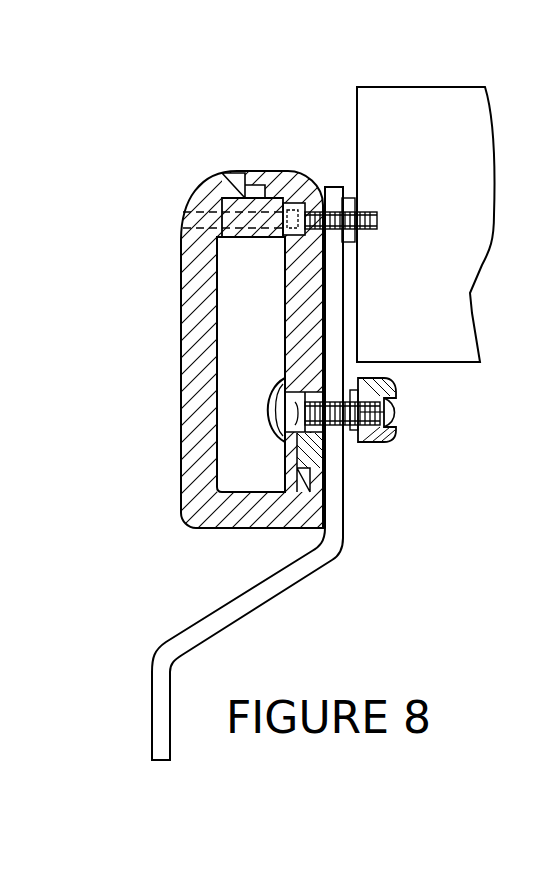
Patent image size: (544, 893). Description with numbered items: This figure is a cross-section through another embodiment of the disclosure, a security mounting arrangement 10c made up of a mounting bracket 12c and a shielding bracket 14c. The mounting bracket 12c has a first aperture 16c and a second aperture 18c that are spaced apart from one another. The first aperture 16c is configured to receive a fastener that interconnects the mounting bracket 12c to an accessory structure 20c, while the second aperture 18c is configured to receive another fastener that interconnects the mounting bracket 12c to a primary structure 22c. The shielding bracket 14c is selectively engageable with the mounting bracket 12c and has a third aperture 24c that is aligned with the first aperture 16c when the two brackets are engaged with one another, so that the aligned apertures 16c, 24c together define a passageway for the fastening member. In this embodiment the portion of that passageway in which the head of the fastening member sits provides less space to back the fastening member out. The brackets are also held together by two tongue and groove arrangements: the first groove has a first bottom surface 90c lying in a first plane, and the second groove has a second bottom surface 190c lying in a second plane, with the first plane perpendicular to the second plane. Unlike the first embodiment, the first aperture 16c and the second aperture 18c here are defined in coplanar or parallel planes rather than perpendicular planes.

The security mounting arrangement 10c is at (158, 128).
The mounting bracket 12c is at (285, 298).
The shielding bracket 14c is at (181, 445).
The first aperture 16c is at (325, 225).
The second aperture 18c is at (305, 440).
The accessory structure 20c is at (474, 229).
The primary structure 22c is at (152, 709).
The third aperture 24c is at (222, 198).
The first bottom surface 90c is at (256, 192).
The second bottom surface 190c is at (298, 490).